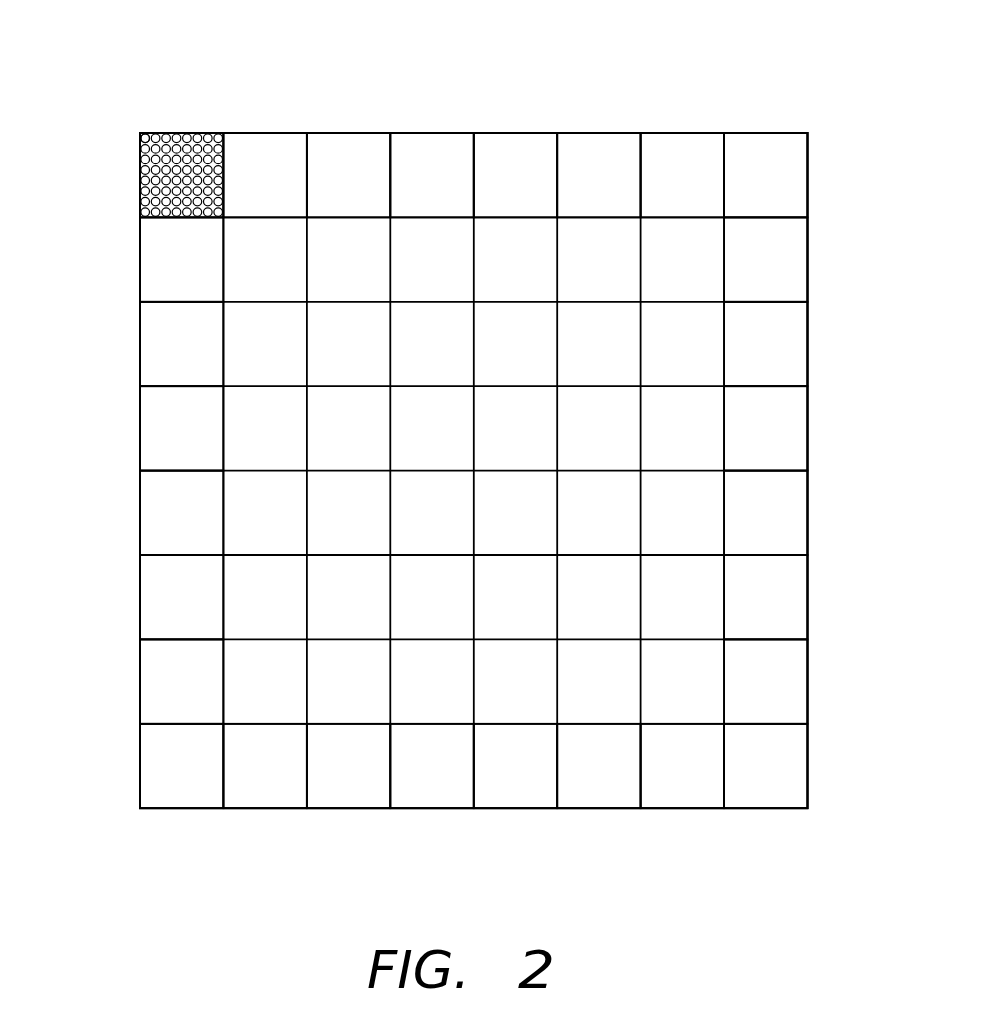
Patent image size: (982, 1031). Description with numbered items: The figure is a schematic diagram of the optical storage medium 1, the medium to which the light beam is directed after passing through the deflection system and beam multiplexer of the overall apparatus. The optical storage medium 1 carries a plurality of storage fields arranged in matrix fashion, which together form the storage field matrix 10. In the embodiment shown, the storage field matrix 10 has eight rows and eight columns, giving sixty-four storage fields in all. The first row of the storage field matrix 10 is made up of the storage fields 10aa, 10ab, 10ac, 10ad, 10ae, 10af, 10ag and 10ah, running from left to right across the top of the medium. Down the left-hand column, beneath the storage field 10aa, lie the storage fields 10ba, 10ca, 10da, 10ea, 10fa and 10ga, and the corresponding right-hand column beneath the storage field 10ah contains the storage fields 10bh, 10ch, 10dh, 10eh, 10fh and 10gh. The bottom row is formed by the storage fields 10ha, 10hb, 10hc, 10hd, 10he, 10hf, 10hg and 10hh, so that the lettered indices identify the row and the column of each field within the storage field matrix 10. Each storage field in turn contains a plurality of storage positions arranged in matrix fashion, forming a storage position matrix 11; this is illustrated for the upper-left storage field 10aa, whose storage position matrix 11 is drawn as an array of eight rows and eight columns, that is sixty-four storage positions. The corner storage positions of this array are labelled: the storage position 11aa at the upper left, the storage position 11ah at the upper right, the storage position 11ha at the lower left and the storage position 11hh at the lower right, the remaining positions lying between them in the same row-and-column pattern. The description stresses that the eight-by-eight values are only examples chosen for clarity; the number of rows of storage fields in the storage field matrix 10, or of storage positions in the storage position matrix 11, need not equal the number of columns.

The optical storage medium 1 is at (100, 85).
The storage field matrix 10 is at (803, 170).
The storage position matrix 11 is at (160, 105).
The storage field 10aa is at (188, 140).
The storage field 10ab is at (289, 148).
The storage field 10ac is at (351, 148).
The storage field 10ad is at (431, 148).
The storage field 10ae is at (514, 148).
The storage field 10af is at (591, 148).
The storage field 10ag is at (682, 148).
The storage field 10ah is at (761, 148).
The storage field 10ba is at (160, 262).
The storage field 10ca is at (160, 346).
The storage field 10da is at (160, 429).
The storage field 10ea is at (160, 513).
The storage field 10fa is at (160, 600).
The storage field 10ga is at (160, 687).
The storage field 10bh is at (795, 258).
The storage field 10ch is at (795, 333).
The storage field 10dh is at (795, 422).
The storage field 10eh is at (795, 503).
The storage field 10fh is at (795, 588).
The storage field 10gh is at (795, 678).
The storage field 10ha is at (189, 785).
The storage field 10hb is at (268, 785).
The storage field 10hc is at (348, 785).
The storage field 10hd is at (433, 785).
The storage field 10he is at (517, 785).
The storage field 10hf is at (597, 785).
The storage field 10hg is at (680, 785).
The storage field 10hh is at (767, 785).
The storage position 11aa is at (140, 140).
The storage position 11ah is at (216, 142).
The storage position 11ha is at (140, 215).
The storage position 11hh is at (215, 213).